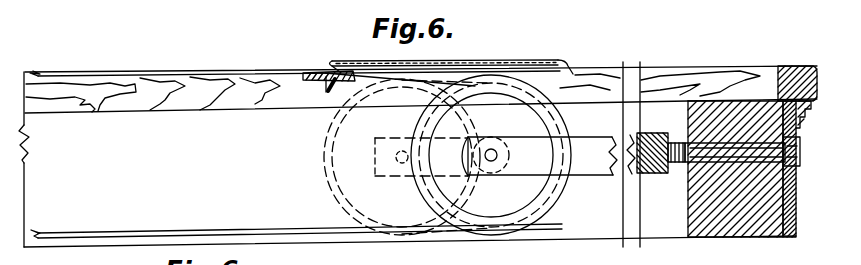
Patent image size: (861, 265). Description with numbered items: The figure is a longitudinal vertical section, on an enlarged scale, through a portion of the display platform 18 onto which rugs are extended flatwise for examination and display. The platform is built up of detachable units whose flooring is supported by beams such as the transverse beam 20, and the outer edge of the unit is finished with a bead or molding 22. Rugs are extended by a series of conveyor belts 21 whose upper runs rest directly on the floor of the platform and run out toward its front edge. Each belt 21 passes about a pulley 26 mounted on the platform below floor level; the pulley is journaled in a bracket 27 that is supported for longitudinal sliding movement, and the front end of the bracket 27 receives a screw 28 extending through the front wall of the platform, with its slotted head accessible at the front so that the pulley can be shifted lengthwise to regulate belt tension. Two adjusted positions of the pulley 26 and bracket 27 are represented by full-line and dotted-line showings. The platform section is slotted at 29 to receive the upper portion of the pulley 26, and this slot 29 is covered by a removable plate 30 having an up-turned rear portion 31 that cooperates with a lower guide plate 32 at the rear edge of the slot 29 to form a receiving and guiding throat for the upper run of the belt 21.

The display platform 18 is at (706, 63).
The transverse beam 20 is at (752, 226).
The conveyor belt 21 is at (141, 72).
The bead or molding 22 is at (800, 96).
The pulley 26 is at (343, 218).
The bracket 27 is at (592, 177).
The screw 28 is at (791, 139).
The slot 29 is at (546, 77).
The removable plate 30 is at (445, 62).
The up-turned rear portion 31 is at (332, 72).
The lower guide plate 32 is at (330, 91).